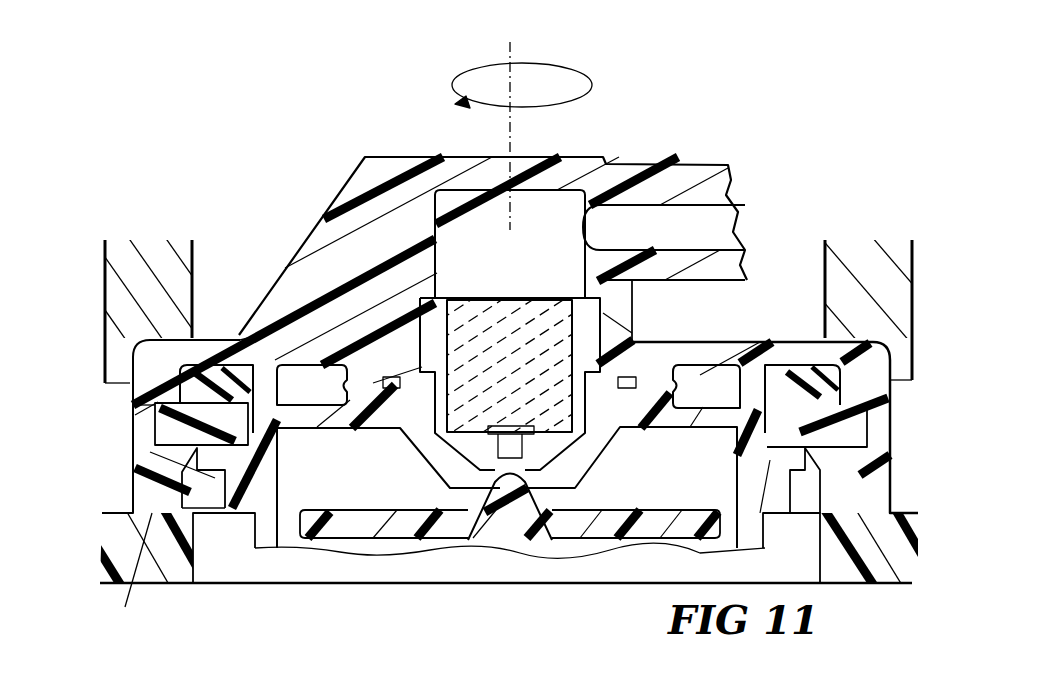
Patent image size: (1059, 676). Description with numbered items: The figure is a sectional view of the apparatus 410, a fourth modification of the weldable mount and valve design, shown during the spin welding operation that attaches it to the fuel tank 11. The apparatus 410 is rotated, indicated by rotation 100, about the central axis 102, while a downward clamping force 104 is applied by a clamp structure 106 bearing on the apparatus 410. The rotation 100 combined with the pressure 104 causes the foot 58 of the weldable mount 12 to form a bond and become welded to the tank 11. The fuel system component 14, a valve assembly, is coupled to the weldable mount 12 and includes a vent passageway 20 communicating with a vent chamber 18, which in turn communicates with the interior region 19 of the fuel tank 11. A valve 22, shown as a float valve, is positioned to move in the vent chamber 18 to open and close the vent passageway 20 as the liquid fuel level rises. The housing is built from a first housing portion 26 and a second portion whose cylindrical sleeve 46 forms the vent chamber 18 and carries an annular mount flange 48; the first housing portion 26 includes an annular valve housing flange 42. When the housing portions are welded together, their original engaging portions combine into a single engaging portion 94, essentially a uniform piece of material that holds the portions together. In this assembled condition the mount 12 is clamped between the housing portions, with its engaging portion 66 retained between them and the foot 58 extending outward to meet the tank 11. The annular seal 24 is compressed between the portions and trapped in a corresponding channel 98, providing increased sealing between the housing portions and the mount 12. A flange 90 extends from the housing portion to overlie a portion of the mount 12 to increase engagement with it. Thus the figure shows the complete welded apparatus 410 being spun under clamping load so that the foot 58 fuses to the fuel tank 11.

The apparatus 410 is at (212, 110).
The downward clamping force 104 is at (141, 200).
The fuel system component 14 is at (412, 136).
The central axis 102 is at (512, 50).
The rotation 100 is at (593, 85).
The clamp structure 106 is at (178, 265).
The first housing portion 26 is at (210, 330).
The channel 98 is at (242, 375).
The engaging portion 94 is at (363, 385).
The vent passageway 20 is at (422, 320).
The annular seal 24 is at (234, 392).
The annular valve housing flange 42 is at (140, 386).
The flange 90 is at (128, 456).
The weldable mount 12 is at (128, 486).
The annular mount flange 48 is at (217, 460).
The engaging portion 66 is at (282, 434).
The valve 22 is at (633, 543).
The foot 58 is at (897, 490).
The cylindrical sleeve 46 is at (218, 545).
The fuel tank 11 is at (100, 568).
The interior region 19 is at (228, 628).
The vent chamber 18 is at (352, 495).